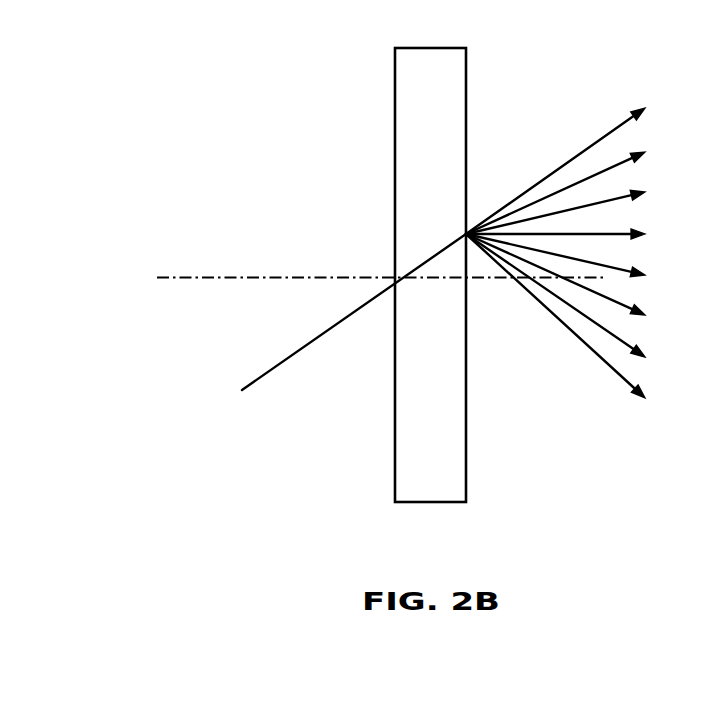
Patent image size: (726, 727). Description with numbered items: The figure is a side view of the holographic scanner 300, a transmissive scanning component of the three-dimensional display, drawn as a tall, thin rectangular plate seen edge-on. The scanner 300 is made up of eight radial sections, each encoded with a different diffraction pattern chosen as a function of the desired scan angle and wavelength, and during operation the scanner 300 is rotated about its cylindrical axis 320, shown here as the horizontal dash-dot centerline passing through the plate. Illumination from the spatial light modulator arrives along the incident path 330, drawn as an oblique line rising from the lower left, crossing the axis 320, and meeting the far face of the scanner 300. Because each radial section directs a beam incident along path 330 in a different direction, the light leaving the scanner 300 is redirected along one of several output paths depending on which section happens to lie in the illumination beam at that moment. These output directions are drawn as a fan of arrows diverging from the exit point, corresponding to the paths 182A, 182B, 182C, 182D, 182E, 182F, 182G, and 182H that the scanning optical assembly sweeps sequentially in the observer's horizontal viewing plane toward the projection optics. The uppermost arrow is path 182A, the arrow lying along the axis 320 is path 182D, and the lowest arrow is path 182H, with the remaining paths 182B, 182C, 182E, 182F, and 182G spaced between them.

The holographic scanner 300 is at (347, 454).
The cylindrical axis 320 is at (270, 277).
The path 330 is at (298, 347).
The path 182A is at (590, 163).
The path 182B is at (590, 186).
The path 182C is at (590, 208).
The path 182D is at (590, 240).
The path 182E is at (590, 265).
The path 182F is at (590, 285).
The path 182G is at (590, 305).
The path 182H is at (590, 327).